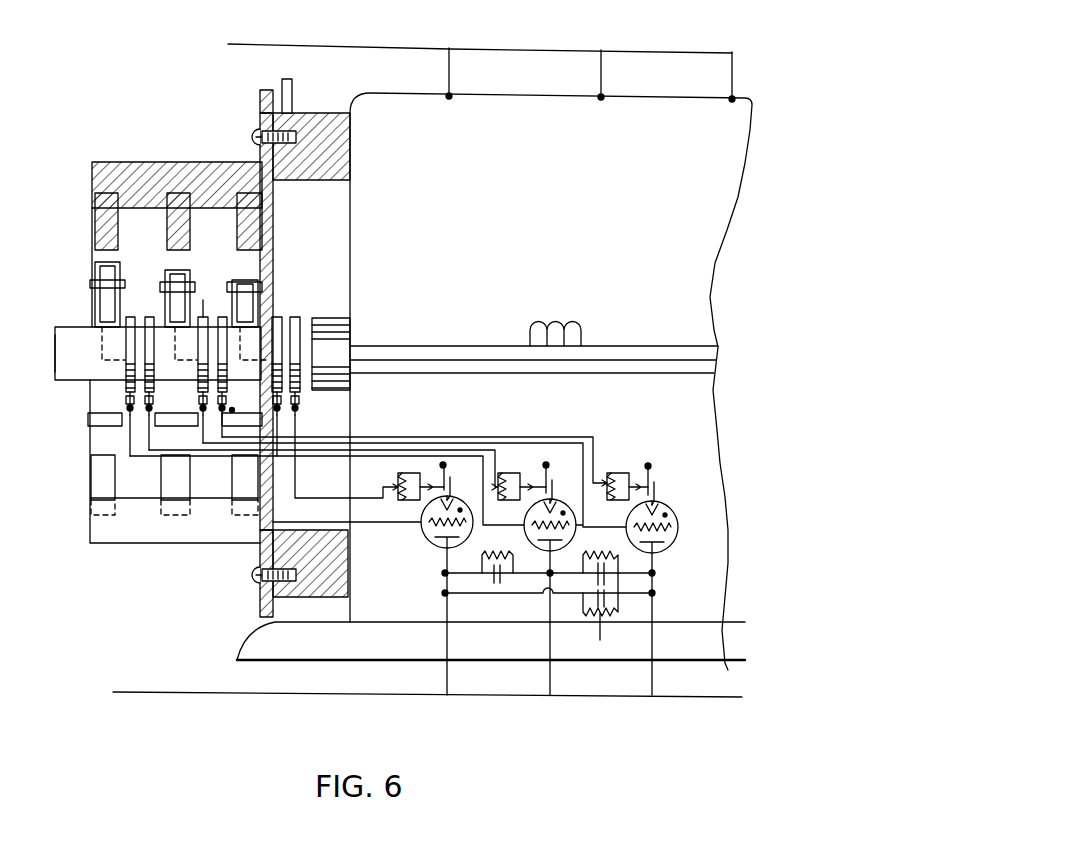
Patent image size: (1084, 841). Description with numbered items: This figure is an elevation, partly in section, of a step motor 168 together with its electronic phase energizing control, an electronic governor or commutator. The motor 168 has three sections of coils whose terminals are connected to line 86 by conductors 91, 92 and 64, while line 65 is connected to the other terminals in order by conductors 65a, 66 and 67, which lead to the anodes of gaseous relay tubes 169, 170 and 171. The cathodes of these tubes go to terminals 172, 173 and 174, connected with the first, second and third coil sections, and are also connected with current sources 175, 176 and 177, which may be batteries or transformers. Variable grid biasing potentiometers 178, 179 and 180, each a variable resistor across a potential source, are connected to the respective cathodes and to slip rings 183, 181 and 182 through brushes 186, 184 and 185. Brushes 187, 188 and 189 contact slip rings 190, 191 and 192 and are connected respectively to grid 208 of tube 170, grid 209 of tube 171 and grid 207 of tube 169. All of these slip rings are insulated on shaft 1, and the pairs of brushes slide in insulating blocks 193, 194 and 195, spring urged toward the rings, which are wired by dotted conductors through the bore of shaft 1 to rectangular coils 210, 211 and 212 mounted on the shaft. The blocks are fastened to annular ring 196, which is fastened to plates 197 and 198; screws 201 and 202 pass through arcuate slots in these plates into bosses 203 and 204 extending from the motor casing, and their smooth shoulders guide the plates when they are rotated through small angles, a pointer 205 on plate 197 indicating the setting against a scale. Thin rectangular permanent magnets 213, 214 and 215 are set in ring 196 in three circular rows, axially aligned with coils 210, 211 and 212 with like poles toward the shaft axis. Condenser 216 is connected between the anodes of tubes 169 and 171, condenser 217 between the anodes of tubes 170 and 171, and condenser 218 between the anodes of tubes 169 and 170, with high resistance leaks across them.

The shaft 1 is at (56, 357).
The conductor 64 is at (730, 75).
The line 65 is at (150, 692).
The conductor 65a is at (444, 685).
The conductor 66 is at (546, 688).
The conductor 67 is at (650, 692).
The line 86 is at (340, 44).
The conductor 91 is at (447, 73).
The conductor 92 is at (599, 75).
The motor 168 is at (597, 240).
The gaseous relay tube 169 is at (438, 545).
The gaseous relay tube 170 is at (527, 518).
The gaseous relay tube 171 is at (675, 537).
The terminal 172 is at (439, 465).
The terminal 173 is at (549, 465).
The terminal 174 is at (650, 465).
The current source 175 is at (451, 481).
The current source 176 is at (556, 488).
The current source 177 is at (660, 487).
The variable grid biasing potentiometer 178 is at (398, 480).
The variable grid biasing potentiometer 179 is at (506, 475).
The variable grid biasing potentiometer 180 is at (605, 478).
The slip ring 181 is at (154, 373).
The slip ring 182 is at (227, 372).
The slip ring 183 is at (302, 372).
The brush 184 is at (153, 404).
The brush 185 is at (226, 404).
The brush 186 is at (300, 404).
The brush 187 is at (126, 406).
The brush 188 is at (198, 404).
The brush 189 is at (234, 411).
The slip ring 190 is at (126, 371).
The slip ring 191 is at (203, 318).
The slip ring 192 is at (277, 318).
The insulating block 193 is at (140, 452).
The insulating block 194 is at (212, 450).
The insulating block 195 is at (300, 420).
The annular ring 196 is at (185, 148).
The plate 197 is at (276, 208).
The plate 198 is at (258, 556).
The screw 201 is at (298, 113).
The screw 202 is at (275, 590).
The boss 203 is at (352, 140).
The boss 204 is at (350, 582).
The pointer 205 is at (266, 88).
The grid 207 is at (294, 84).
The grid 208 is at (527, 535).
The grid 209 is at (670, 520).
The rectangular coil 210 is at (95, 305).
The rectangular coil 211 is at (165, 305).
The rectangular coil 212 is at (245, 318).
The permanent magnet 213 is at (92, 222).
The permanent magnet 214 is at (167, 228).
The permanent magnet 215 is at (237, 230).
The condenser 216 is at (600, 642).
The condenser 217 is at (606, 586).
The condenser 218 is at (548, 586).